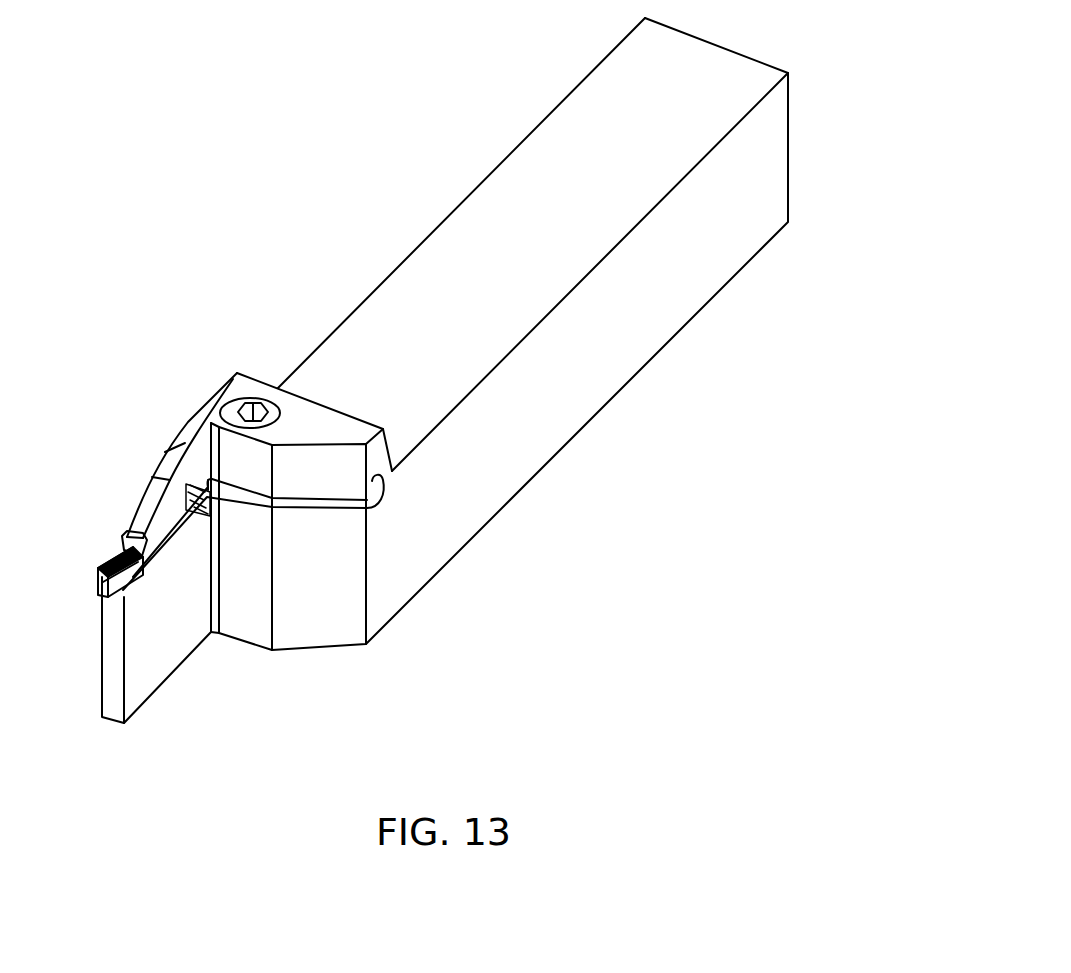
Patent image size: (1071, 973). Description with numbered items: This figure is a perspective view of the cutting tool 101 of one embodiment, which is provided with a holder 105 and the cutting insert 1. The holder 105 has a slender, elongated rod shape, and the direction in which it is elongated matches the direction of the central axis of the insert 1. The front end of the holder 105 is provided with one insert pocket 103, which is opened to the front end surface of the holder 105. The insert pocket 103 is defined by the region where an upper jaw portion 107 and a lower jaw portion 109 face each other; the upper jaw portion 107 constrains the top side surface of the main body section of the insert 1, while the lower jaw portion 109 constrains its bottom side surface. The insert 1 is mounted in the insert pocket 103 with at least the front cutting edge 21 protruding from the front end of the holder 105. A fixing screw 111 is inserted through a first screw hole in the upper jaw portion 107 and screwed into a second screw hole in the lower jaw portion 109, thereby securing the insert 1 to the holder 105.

The cutting tool 101 is at (304, 160).
The holder 105 is at (645, 329).
The insert pocket 103 is at (165, 523).
The upper jaw portion 107 is at (164, 457).
The lower jaw portion 109 is at (167, 650).
The fixing screw 111 is at (252, 408).
The cutting insert 1 is at (120, 553).
The front cutting edge 21 is at (100, 579).